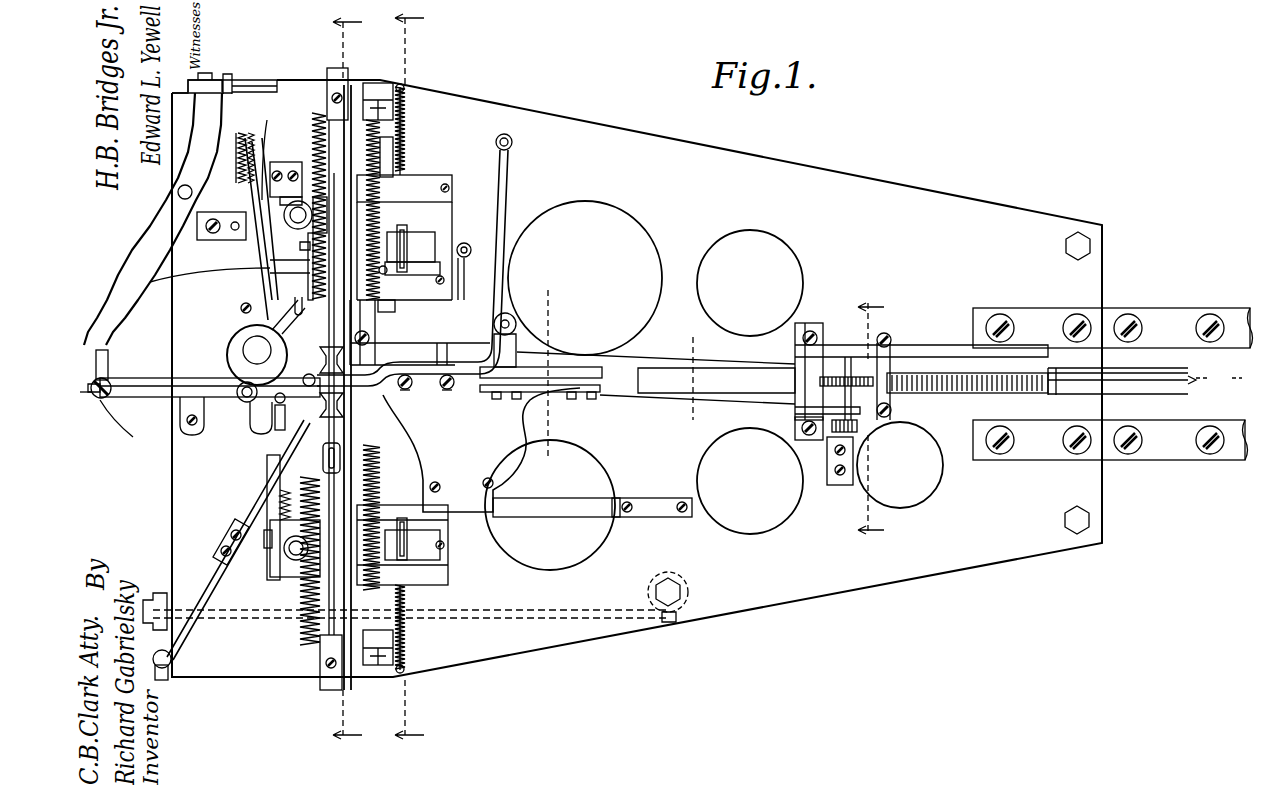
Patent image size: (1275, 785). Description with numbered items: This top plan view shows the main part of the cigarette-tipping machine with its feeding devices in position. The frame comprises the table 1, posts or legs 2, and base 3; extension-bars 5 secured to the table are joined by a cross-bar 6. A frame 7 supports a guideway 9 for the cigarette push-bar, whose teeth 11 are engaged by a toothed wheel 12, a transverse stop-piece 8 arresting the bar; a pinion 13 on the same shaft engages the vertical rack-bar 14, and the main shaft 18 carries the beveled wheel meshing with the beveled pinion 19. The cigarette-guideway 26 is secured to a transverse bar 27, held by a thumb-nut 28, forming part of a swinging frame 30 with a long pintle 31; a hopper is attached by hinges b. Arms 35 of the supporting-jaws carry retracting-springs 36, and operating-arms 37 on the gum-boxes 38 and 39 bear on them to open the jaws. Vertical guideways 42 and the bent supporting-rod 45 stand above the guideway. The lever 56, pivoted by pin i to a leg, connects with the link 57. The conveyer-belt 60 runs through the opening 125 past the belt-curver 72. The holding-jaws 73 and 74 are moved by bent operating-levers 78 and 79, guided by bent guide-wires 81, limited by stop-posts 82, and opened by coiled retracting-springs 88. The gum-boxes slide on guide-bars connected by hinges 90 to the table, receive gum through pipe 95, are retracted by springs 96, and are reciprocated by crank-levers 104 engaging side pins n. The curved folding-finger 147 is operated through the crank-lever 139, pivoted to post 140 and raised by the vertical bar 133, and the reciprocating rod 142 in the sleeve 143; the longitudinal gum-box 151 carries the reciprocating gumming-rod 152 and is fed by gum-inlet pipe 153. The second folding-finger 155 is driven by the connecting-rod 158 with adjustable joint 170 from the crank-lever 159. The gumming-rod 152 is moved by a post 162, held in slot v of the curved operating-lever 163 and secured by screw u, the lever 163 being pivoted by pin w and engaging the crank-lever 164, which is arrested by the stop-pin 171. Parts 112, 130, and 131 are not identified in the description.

The table 1 is at (1102, 505).
The posts or legs 2 is at (690, 590).
The base 3 is at (662, 385).
The extension-bars 5 is at (1190, 480).
The cross-bar 6 is at (408, 381).
The frame 7 is at (832, 345).
The transverse stop-piece 8 is at (1056, 350).
The guideway 9 is at (758, 375).
The teeth 11 is at (985, 393).
The toothed wheel 12 is at (875, 378).
The pinion 13 is at (870, 428).
The vertical rack-bar 14 is at (840, 432).
The main shaft 18 is at (741, 342).
The beveled pinion 19 is at (550, 421).
The cigarette-guideway 26 is at (565, 365).
The transverse bar 27 is at (516, 336).
The thumb-nut 28 is at (525, 292).
The swinging frame 30 is at (481, 450).
The long pintle 31 is at (620, 518).
The outwardly-projecting arms 35 is at (385, 333).
The retracting-springs 36 is at (350, 672).
The operating-arms 37 is at (380, 470).
The gum-box 38 is at (325, 445).
The gum-box 39 is at (386, 302).
The vertical guideways 42 is at (450, 390).
The bent supporting-rod 45 is at (425, 386).
The lever 56 is at (553, 620).
The long link 57 is at (160, 595).
The conveyer-belt 60 is at (1136, 381).
The belt-curver 72 is at (888, 335).
The cigarette-holding jaw 73 is at (445, 222).
The cigarette-holding jaw 74 is at (448, 548).
The operating-lever 78 is at (403, 232).
The operating-lever 79 is at (412, 539).
The bent guide-wires 81 is at (472, 271).
The stop-posts 82 is at (377, 379).
The coiled retracting-springs 88 is at (405, 625).
The hinges 90 is at (322, 668).
The gum-inlet opening and pipe 95 is at (292, 562).
The coiled retracting-springs 96 is at (305, 610).
The crank-levers 104 is at (262, 470).
The connector 112 is at (342, 348).
The opening 125 is at (276, 566).
The wire 130 is at (248, 282).
The screw 131 is at (240, 308).
The vertical bar 133 is at (284, 162).
The crank-lever 139 is at (219, 145).
The post 140 is at (222, 212).
The reciprocating rod 142 is at (240, 180).
The sleeve or guideway 143 is at (258, 250).
The curved folding-finger 147 is at (228, 340).
The longitudinal gum-box 151 is at (169, 416).
The reciprocating gumming-rod 152 is at (150, 378).
The gum-inlet pipe 153 is at (256, 410).
The second curved folding-finger 155 is at (276, 432).
The connecting-rod 158 is at (248, 492).
The crank-lever 159 is at (176, 650).
The post 162 is at (118, 398).
The curved operating-lever 163 is at (162, 208).
The crank-lever 164 is at (258, 78).
The adjustable joint 170 is at (212, 538).
The stop-pin 171 is at (228, 72).
The hinges b is at (578, 402).
The pin i is at (672, 620).
The side pins n is at (260, 537).
The screw u is at (118, 432).
The slot v is at (113, 360).
The pin w is at (179, 191).